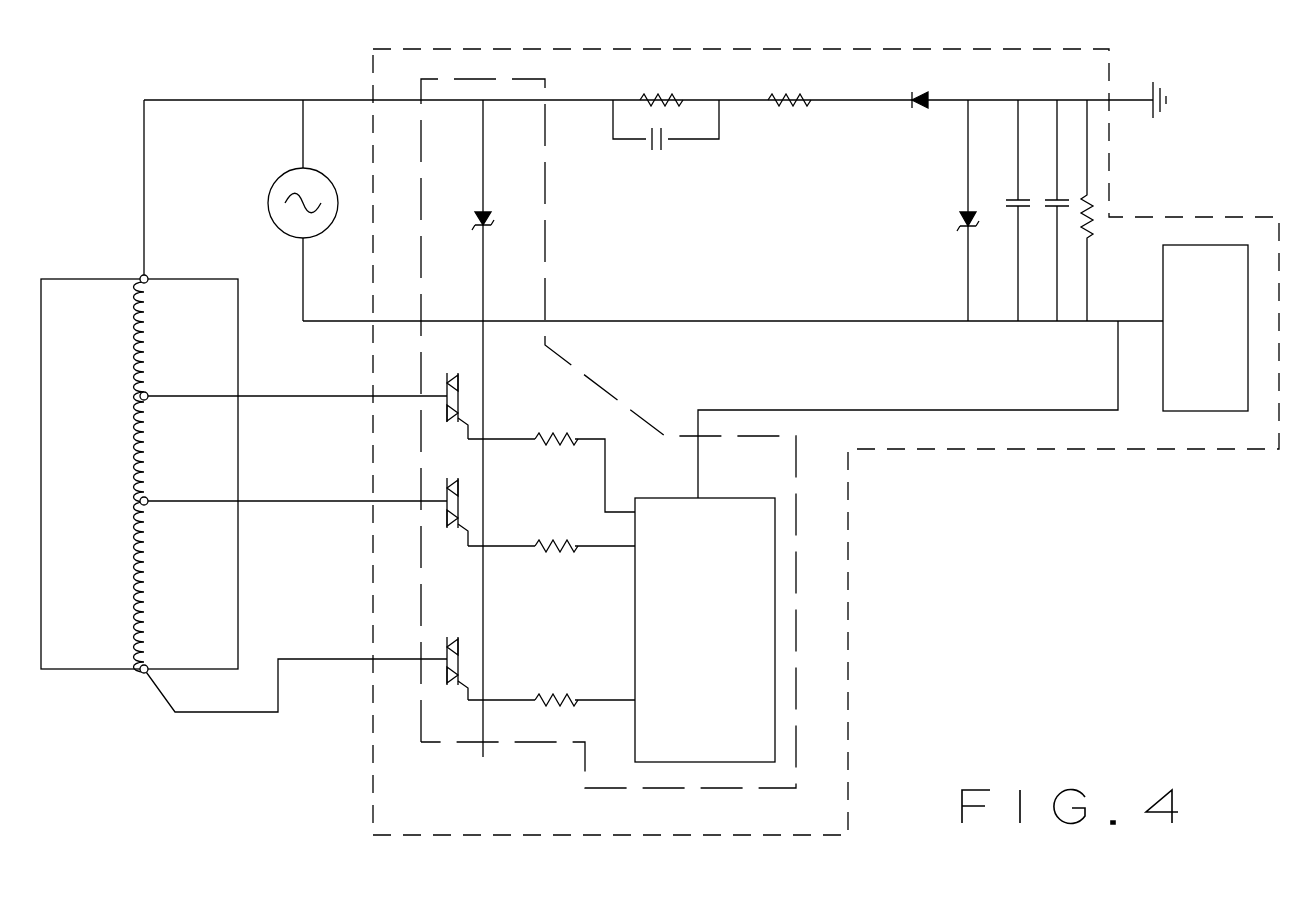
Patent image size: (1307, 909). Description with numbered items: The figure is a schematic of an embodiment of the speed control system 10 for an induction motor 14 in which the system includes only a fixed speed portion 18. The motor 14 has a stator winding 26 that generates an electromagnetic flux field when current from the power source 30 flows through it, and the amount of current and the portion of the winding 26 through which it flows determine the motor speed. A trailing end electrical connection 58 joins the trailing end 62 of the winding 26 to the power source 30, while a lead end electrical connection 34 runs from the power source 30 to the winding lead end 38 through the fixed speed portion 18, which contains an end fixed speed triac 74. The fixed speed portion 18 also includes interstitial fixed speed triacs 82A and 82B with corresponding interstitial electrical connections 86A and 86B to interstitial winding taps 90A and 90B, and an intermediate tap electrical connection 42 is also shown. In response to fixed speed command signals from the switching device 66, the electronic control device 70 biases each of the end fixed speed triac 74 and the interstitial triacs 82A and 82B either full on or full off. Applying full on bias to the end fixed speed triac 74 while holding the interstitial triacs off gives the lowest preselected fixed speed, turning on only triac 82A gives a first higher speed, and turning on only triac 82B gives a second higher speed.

The speed control system 10 is at (1000, 49).
The induction motor 14 is at (100, 669).
The fixed speed portion 18 is at (505, 79).
The motor stator winding 26 is at (118, 470).
The power source 30 is at (278, 180).
The lead end electrical connection 34 is at (483, 637).
The lead end 38 is at (144, 669).
The intermediate tap electrical connection 42 is at (483, 285).
The trailing end electrical connection 58 is at (215, 100).
The trailing end 62 is at (144, 279).
The switching device 66 is at (1248, 298).
The electronic control device 70 is at (735, 535).
The end fixed speed triac 74 is at (447, 674).
The interstitial fixed speed triac 82A is at (447, 488).
The interstitial fixed speed triac 82B is at (447, 381).
The interstitial electrical connection 86A is at (327, 501).
The interstitial electrical connection 86B is at (290, 396).
The interstitial winding tap 90A is at (144, 501).
The interstitial winding tap 90B is at (144, 396).